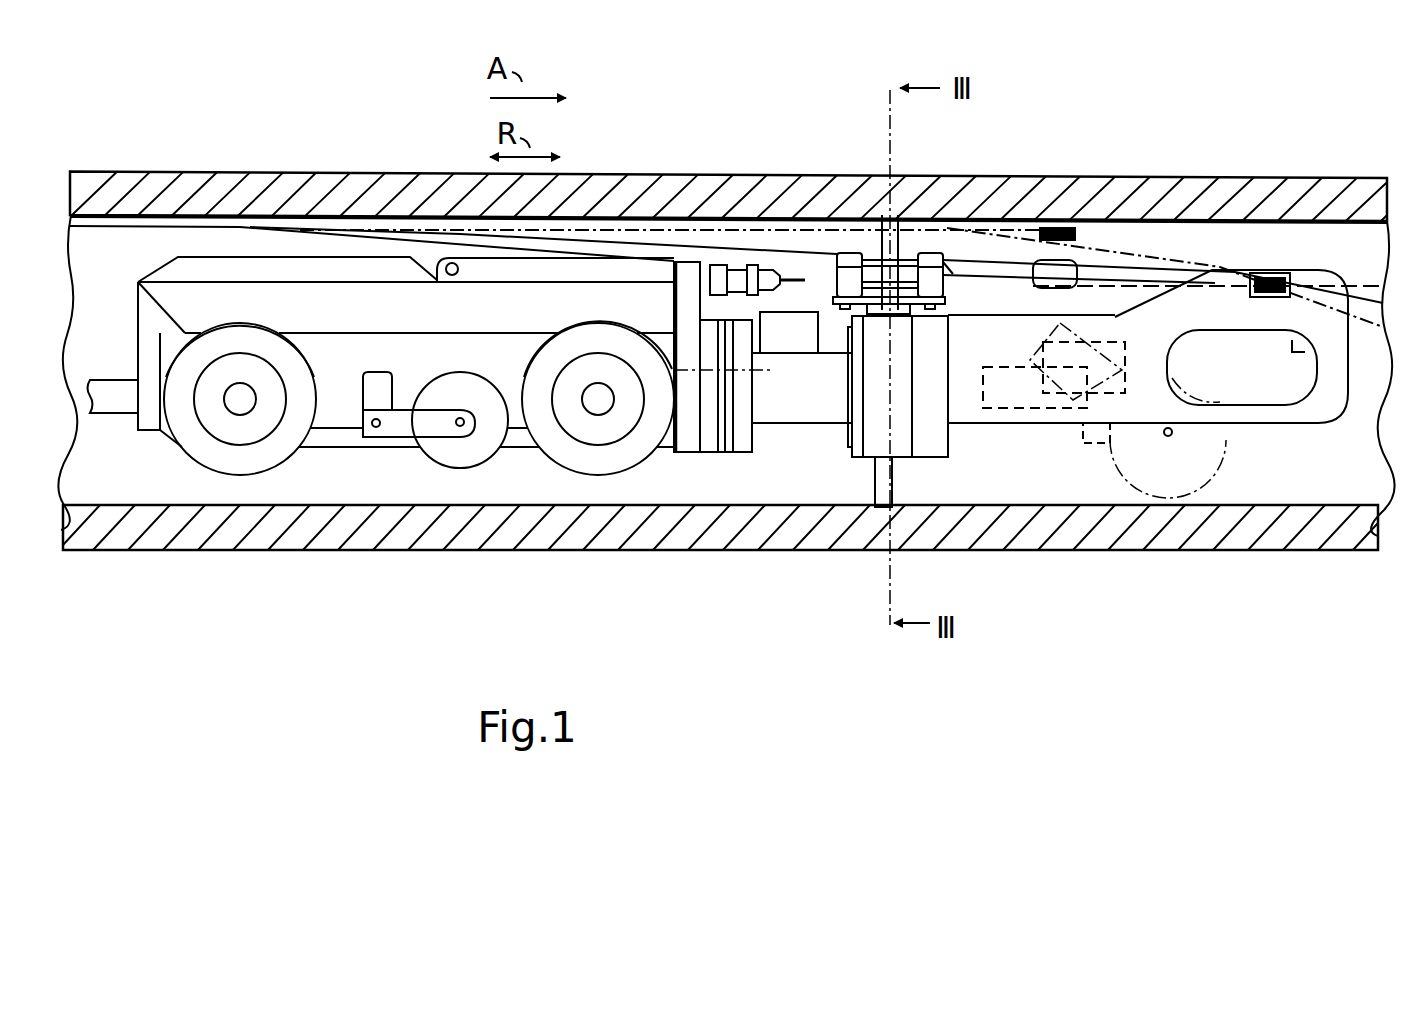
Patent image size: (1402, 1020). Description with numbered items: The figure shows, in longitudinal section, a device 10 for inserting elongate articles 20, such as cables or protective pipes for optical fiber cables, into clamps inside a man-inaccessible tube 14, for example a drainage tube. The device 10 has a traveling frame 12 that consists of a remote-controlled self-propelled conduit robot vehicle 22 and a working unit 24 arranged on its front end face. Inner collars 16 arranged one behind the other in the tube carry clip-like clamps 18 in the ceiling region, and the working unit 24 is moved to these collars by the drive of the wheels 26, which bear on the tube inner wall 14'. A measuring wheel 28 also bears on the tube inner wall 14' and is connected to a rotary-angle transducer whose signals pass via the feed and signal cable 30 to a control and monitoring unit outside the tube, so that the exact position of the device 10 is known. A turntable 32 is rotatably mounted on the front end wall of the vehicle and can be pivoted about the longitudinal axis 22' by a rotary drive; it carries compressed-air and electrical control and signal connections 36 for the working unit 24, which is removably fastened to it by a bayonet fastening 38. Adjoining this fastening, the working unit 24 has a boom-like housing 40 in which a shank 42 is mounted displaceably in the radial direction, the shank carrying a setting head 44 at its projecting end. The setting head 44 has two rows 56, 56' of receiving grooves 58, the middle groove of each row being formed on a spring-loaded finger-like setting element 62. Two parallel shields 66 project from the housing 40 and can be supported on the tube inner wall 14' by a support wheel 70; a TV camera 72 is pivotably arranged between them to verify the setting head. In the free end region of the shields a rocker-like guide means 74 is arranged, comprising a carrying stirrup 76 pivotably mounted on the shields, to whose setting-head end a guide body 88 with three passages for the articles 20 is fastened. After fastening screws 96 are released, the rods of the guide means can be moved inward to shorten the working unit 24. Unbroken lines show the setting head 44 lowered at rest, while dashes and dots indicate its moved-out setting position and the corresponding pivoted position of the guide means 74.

The device 10 is at (822, 465).
The traveling frame 12 is at (523, 466).
The tube 14 is at (726, 293).
The tube inner wall 14' is at (720, 552).
The inner collar 16 is at (900, 493).
The clamp 18 is at (902, 245).
The elongate article 20 is at (122, 225).
The conduit robot vehicle 22 is at (406, 260).
The longitudinal axis 22' is at (746, 362).
The working unit 24 is at (1062, 445).
The wheel 26 is at (238, 455).
The measuring wheel 28 is at (457, 468).
The feed and signal cable 30 is at (110, 413).
The turntable 32 is at (685, 440).
The compressed-air and electrical control and signal connections 36 is at (738, 277).
The bayonet fastening 38 is at (717, 455).
The housing 40 is at (940, 472).
The shank 42 is at (898, 312).
The setting head 44 is at (953, 296).
The row of receiving grooves 56 is at (840, 195).
The row of receiving grooves 56' is at (985, 206).
The receiving groove 58 is at (950, 287).
The setting element 62 is at (942, 258).
The shield 66 is at (1272, 417).
The support wheel 70 is at (1200, 490).
The TV camera 72 is at (1090, 410).
The guide means 74 is at (1228, 268).
The carrying stirrup 76 is at (1155, 262).
The guide body 88 is at (1058, 228).
The fastening screw 96 is at (1293, 347).